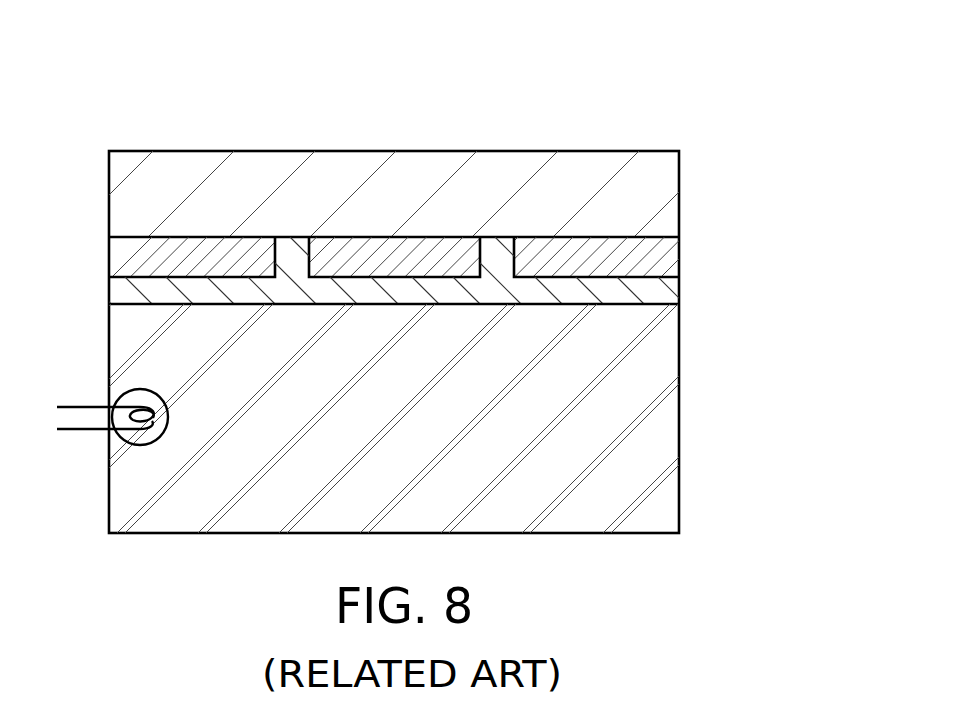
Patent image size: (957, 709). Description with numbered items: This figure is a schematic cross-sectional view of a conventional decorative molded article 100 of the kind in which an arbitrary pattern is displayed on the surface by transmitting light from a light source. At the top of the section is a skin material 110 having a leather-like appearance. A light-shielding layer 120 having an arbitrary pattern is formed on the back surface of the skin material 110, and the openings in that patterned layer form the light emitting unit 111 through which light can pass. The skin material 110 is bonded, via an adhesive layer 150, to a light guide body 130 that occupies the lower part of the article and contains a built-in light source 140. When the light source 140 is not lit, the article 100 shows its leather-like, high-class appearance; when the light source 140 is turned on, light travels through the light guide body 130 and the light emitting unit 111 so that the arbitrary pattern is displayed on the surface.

The decorative molded article 100 is at (723, 135).
The skin material 110 is at (679, 203).
The light emitting unit 111 is at (514, 237).
The light-shielding layer 120 is at (679, 257).
The light guide body 130 is at (679, 422).
The light source 140 is at (100, 450).
The adhesive layer 150 is at (679, 298).